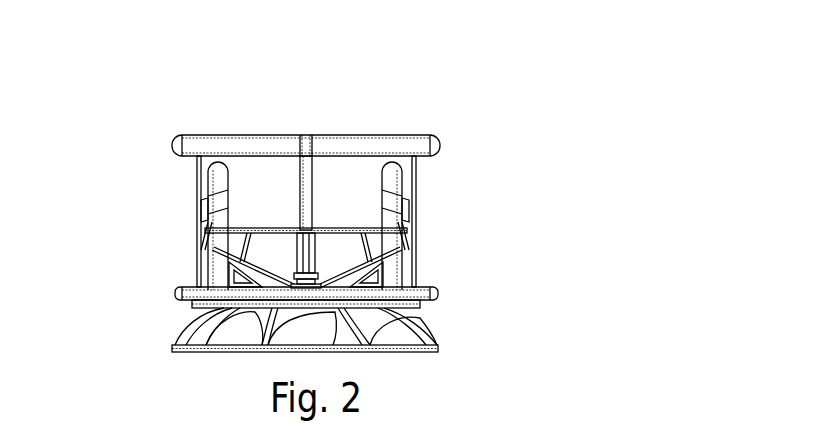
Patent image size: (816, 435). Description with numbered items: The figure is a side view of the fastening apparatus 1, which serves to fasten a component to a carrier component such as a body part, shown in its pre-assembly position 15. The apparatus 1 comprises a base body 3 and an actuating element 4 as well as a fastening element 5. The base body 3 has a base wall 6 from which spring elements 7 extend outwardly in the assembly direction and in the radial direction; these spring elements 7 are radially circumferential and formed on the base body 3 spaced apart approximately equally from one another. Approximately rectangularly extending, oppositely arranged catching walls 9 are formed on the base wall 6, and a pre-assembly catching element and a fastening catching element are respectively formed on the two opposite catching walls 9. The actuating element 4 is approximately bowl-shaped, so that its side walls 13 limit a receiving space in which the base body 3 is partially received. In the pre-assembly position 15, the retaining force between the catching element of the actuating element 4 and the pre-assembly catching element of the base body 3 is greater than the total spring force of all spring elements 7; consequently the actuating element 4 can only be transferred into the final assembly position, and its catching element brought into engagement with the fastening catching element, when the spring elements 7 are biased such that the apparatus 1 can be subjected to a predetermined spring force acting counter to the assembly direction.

The fastening apparatus 1 is at (468, 69).
The base body 3 is at (425, 294).
The actuating element 4 is at (417, 146).
The fastening element 5 is at (350, 247).
The base wall 6 is at (175, 292).
The spring elements 7 is at (183, 340).
The catching walls 9 is at (218, 268).
The side walls 13 is at (345, 148).
The pre-assembly position 15 is at (526, 207).